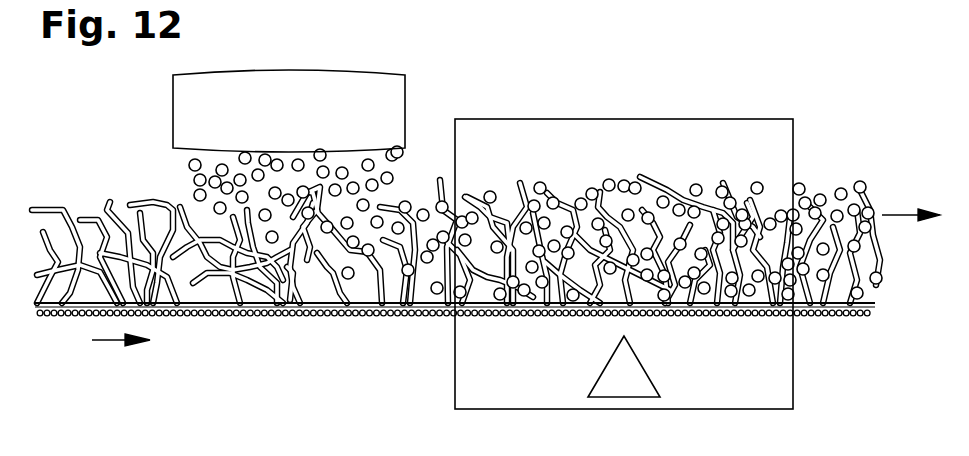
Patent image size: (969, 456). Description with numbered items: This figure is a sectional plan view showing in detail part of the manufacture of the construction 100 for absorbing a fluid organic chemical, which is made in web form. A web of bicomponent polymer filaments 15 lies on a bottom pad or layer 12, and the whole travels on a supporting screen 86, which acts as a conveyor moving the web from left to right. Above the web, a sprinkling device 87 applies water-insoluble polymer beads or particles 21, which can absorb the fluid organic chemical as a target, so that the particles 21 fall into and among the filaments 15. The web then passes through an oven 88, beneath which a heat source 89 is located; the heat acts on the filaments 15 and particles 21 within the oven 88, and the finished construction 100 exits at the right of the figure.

The bottom pad or layer 12 is at (876, 304).
The bicomponent polymer filament 15 is at (867, 233).
The water-insoluble polymer bead or particle 21 is at (793, 215).
The supporting screen 86 is at (245, 316).
The sprinkling device 87 is at (271, 122).
The oven 88 is at (641, 172).
The heat source 89 is at (643, 365).
The construction for absorbing a fluid organic chemical 100 is at (833, 197).